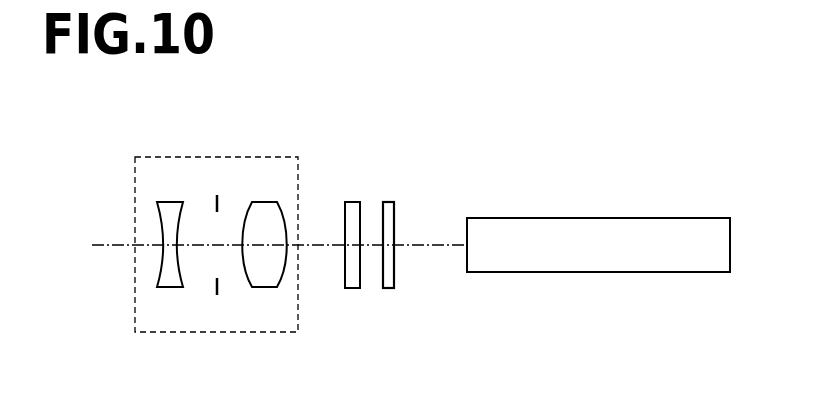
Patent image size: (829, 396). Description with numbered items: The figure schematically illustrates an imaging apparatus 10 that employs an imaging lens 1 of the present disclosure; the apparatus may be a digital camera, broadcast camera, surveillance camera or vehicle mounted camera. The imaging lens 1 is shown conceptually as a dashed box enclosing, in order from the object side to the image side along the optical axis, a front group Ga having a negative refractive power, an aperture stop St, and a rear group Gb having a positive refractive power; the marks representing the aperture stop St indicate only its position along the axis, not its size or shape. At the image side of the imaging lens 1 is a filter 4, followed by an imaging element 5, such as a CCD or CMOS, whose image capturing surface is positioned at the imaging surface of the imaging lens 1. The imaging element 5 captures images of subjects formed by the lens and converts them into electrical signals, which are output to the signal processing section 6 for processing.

The imaging apparatus 10 is at (362, 102).
The imaging lens 1 is at (233, 157).
The front group Ga is at (165, 287).
The aperture stop St is at (217, 295).
The rear group Gb is at (258, 287).
The filter 4 is at (351, 202).
The imaging element 5 is at (389, 202).
The signal processing section 6 is at (715, 218).